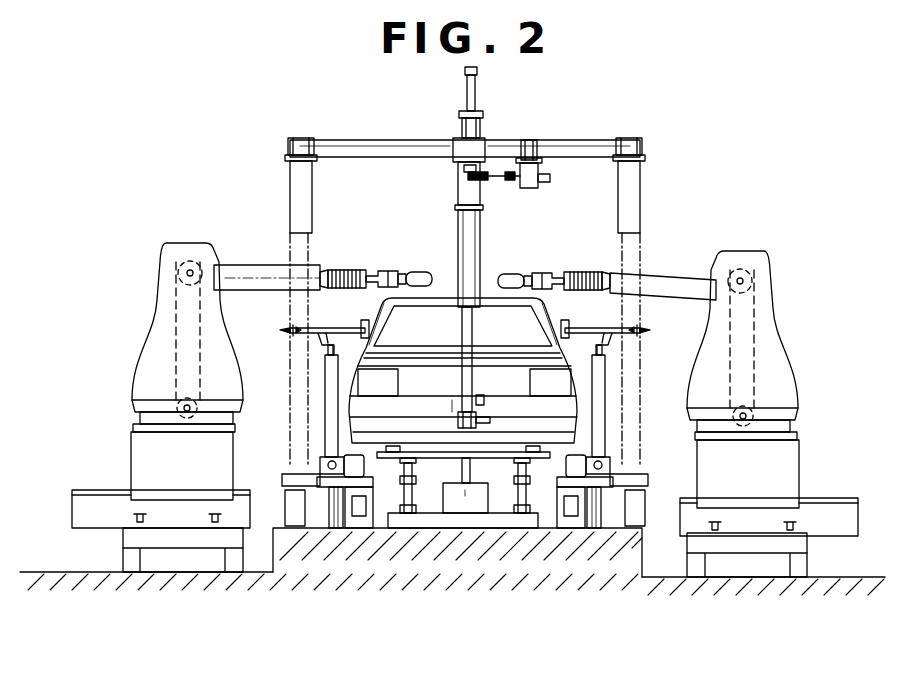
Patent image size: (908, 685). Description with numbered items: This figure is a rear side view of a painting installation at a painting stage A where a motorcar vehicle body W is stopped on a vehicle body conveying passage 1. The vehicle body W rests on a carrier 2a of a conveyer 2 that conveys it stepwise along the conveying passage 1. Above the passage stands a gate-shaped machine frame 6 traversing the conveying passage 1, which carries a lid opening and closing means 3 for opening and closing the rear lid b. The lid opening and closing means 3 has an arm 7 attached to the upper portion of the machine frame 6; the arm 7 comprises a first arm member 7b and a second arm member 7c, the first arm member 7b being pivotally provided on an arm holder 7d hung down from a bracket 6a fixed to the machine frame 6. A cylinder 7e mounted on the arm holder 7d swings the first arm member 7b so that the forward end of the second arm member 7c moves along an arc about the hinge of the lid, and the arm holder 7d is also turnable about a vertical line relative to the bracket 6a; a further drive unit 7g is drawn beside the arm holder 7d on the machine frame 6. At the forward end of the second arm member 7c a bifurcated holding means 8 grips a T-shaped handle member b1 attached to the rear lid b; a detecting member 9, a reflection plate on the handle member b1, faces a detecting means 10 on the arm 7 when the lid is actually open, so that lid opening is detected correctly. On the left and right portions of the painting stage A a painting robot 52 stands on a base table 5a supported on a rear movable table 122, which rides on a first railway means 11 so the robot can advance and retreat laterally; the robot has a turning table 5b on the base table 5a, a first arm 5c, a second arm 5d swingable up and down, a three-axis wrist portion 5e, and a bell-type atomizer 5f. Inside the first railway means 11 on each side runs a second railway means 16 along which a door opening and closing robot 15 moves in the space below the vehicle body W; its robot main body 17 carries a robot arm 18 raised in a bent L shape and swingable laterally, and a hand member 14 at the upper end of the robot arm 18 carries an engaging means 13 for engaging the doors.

The vehicle body conveying passage 1 is at (431, 521).
The conveyer 2 is at (481, 513).
The carrier 2a is at (474, 483).
The lid opening and closing means 3 is at (489, 110).
The base table 5a is at (141, 473).
The turning table 5b is at (146, 420).
The first arm 5c is at (176, 340).
The second arm 5d is at (249, 268).
The wrist portion 5e is at (350, 269).
The bell-type atomizer 5f is at (407, 270).
The rear painting robot 52 is at (471, 362).
The gate-shaped machine frame 6 is at (373, 148).
The bracket 6a is at (490, 148).
The arm 7 is at (466, 310).
The first arm member 7b is at (458, 258).
The second arm member 7c is at (472, 341).
The arm holder 7d is at (468, 187).
The cylinder 7e is at (466, 98).
The drive unit 7g is at (542, 190).
The holding means 8 is at (466, 449).
The detecting member 9 is at (488, 424).
The detecting means 10 is at (481, 398).
The first railway means 11 is at (250, 550).
The rear movable table 122 is at (104, 523).
The engaging means 13 is at (370, 347).
The hand member 14 is at (344, 327).
The door opening and closing robot 15 is at (320, 408).
The second railway means 16 is at (351, 528).
The robot main body 17 is at (366, 468).
The robot arm 18 is at (320, 458).
The painting stage A is at (279, 229).
The motorcar vehicle body W is at (553, 327).
The rear lid b is at (470, 499).
The handle member b1 is at (456, 408).